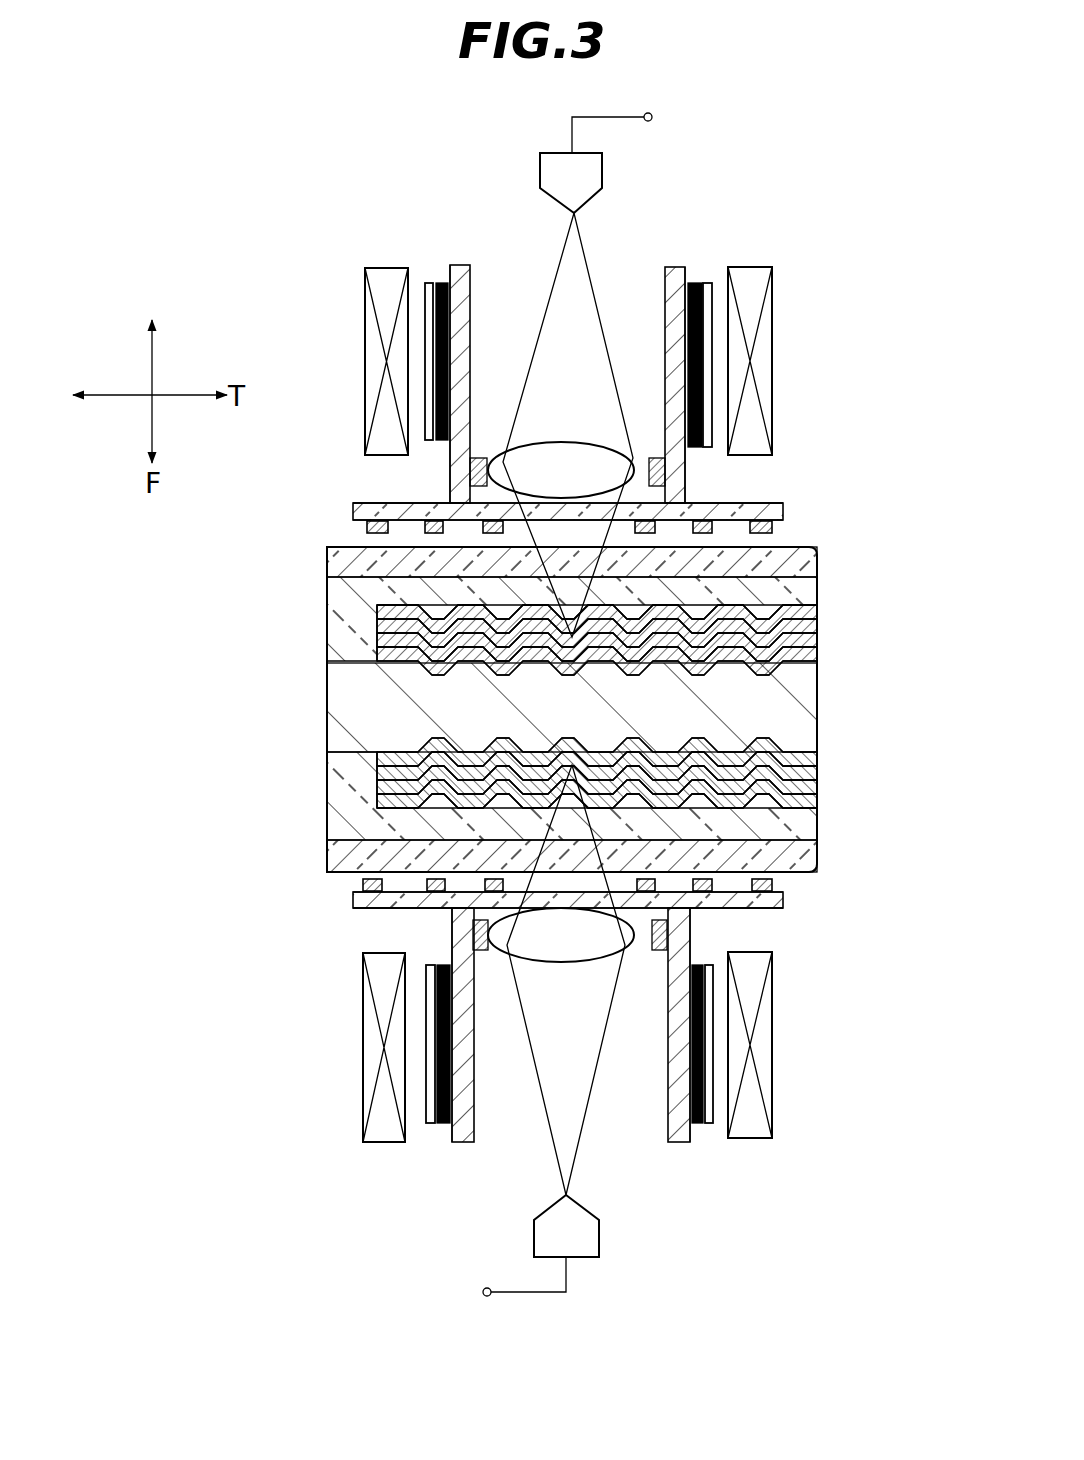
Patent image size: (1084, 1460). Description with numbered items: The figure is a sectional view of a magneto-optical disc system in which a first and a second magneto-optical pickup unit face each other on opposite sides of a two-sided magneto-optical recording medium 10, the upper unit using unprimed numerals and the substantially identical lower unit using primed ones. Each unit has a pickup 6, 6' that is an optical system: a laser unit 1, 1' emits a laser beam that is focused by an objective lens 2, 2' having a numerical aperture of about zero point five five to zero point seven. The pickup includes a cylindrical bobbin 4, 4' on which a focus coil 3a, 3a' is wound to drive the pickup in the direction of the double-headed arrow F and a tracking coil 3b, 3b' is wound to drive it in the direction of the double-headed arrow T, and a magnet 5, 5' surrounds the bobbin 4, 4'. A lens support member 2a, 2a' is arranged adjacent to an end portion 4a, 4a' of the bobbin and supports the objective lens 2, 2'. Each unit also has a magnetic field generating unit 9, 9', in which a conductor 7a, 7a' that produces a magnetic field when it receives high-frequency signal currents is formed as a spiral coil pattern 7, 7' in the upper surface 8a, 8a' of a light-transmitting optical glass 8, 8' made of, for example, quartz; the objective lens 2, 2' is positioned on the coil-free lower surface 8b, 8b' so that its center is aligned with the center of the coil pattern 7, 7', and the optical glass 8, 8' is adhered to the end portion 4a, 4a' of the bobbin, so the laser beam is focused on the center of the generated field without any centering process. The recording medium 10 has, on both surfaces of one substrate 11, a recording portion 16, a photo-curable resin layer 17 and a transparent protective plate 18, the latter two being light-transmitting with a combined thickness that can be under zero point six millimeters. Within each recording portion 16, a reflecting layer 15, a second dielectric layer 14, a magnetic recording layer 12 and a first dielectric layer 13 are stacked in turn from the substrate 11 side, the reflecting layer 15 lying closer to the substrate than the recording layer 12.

The laser unit 1 is at (596, 163).
The laser unit 1' is at (539, 1245).
The objective lens 2 is at (559, 436).
The objective lens 2' is at (569, 974).
The lens support member 2a is at (573, 463).
The lens support member 2a' is at (573, 945).
The focus coil 3a is at (588, 329).
The focus coil 3a' is at (548, 1085).
The tracking coil 3b is at (592, 329).
The tracking coil 3b' is at (547, 1085).
The bobbin 4 is at (577, 357).
The bobbin 4' is at (564, 1056).
The end portion of coil bobbin 4a is at (563, 489).
The end portion of coil bobbin 4a' is at (578, 927).
The magnet 5 is at (567, 358).
The magnet 5' is at (575, 1047).
The pickup 6 is at (591, 404).
The pickup 6' is at (542, 1002).
The spiral coil pattern 7 is at (628, 535).
The spiral coil pattern 7' is at (617, 869).
The conductor 7a is at (568, 480).
The conductor 7a' is at (582, 932).
The optical glass 8 is at (572, 496).
The optical glass 8' is at (565, 911).
The upper surface of optical glass 8a is at (574, 521).
The upper surface of optical glass 8a' is at (563, 897).
The lower surface of optical glass 8b is at (575, 485).
The lower surface of optical glass 8b' is at (563, 923).
The magnetic field generating unit 9 is at (652, 384).
The magnetic field generating unit 9' is at (479, 1025).
The magneto-optical recording medium 10 is at (259, 666).
The substrate 11 is at (337, 716).
The magnetic recording layer 12 is at (812, 625).
The first dielectric layer 13 is at (809, 607).
The second dielectric layer 14 is at (812, 640).
The reflecting layer 15 is at (812, 655).
The recording portion 16 is at (879, 570).
The photo-curable resin layer 17 is at (337, 608).
The transparent protective plate 18 is at (327, 562).